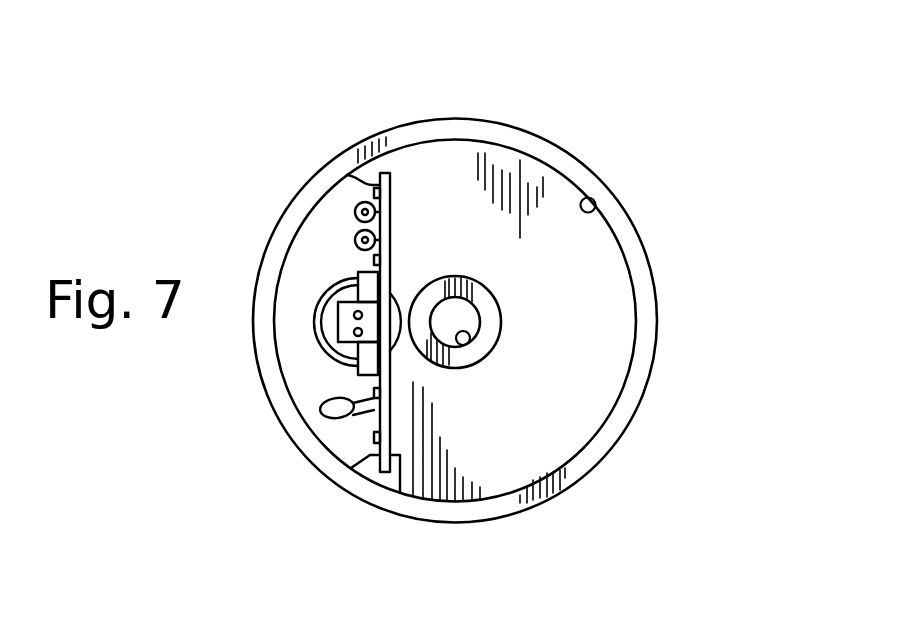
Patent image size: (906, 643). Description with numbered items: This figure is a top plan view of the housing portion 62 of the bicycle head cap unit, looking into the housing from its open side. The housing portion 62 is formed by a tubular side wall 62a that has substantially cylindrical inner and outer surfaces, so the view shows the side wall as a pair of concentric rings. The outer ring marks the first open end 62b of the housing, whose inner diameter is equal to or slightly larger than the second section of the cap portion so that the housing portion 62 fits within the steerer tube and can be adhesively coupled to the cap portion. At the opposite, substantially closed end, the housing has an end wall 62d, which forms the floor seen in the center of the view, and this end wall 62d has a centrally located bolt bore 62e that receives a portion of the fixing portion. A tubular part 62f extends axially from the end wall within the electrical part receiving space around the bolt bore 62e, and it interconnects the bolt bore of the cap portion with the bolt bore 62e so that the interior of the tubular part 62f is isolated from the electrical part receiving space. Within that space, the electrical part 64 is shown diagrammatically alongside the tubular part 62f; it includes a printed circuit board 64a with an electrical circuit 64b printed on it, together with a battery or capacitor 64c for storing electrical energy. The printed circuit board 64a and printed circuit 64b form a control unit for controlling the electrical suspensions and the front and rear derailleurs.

The housing portion 62 is at (536, 128).
The tubular side wall 62a is at (648, 262).
The first open end 62b is at (594, 200).
The end wall 62d is at (585, 359).
The bolt bore 62e is at (461, 345).
The tubular part 62f is at (499, 300).
The electrical part 64 is at (405, 192).
The printed circuit board 64a is at (390, 220).
The electrical circuit 64b is at (374, 390).
The battery or capacitor 64c is at (358, 273).